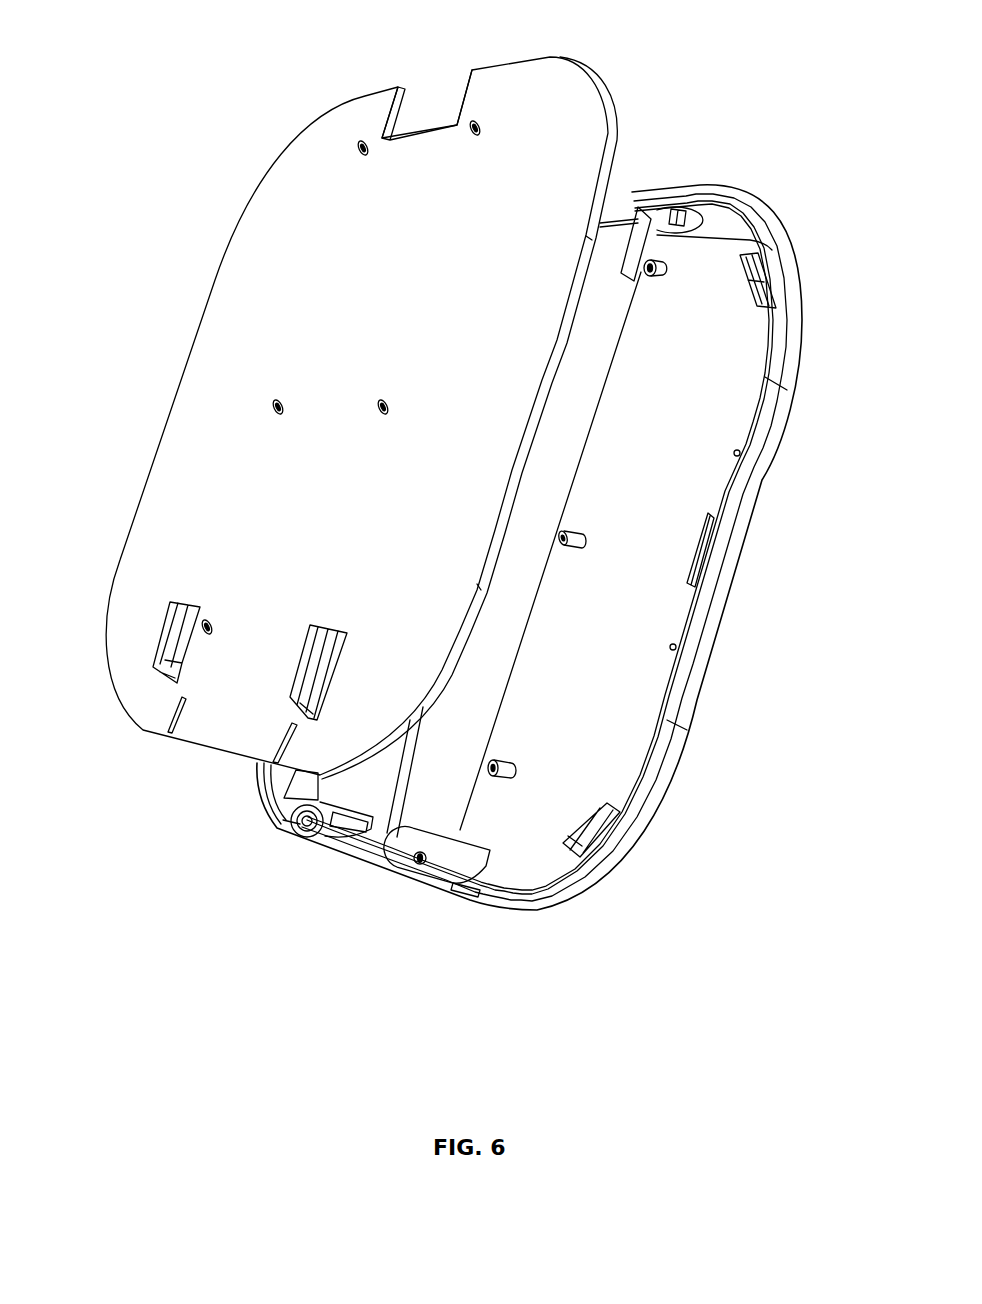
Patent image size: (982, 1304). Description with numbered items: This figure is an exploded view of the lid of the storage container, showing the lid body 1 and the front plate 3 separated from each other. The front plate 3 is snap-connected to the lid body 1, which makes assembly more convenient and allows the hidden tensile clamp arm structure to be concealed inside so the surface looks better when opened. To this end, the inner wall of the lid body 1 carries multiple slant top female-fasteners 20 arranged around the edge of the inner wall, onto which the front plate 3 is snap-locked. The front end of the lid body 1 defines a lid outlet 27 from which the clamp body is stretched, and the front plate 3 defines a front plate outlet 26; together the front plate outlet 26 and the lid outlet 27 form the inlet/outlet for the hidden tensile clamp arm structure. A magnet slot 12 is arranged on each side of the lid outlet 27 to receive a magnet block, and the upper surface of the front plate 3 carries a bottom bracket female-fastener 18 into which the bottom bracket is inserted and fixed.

The lid body 1 is at (600, 693).
The front plate 3 is at (280, 257).
The magnet slot 12 is at (690, 187).
The bottom bracket female-fastener 18 is at (180, 640).
The slant top female-fastener 20 is at (780, 240).
The front plate outlet 26 is at (433, 105).
The lid outlet 27 is at (613, 208).